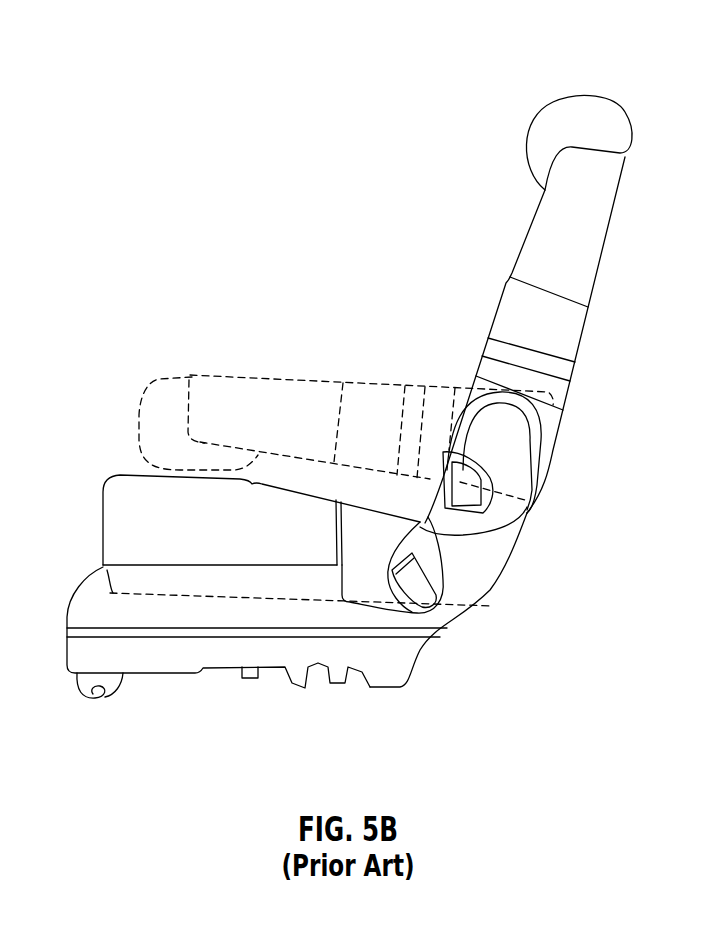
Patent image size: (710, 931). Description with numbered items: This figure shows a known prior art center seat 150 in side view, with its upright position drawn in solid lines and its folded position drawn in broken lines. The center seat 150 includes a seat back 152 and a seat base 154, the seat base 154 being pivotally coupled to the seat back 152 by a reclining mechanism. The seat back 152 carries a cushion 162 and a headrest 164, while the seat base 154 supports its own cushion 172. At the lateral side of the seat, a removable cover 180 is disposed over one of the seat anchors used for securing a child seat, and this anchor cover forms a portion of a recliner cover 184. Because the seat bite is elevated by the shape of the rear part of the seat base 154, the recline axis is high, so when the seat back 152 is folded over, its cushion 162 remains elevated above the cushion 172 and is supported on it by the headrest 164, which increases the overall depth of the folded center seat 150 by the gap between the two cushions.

The center seat 150 is at (297, 292).
The seat back 152 is at (602, 250).
The seat base 154 is at (203, 550).
The cushion 162 is at (510, 302).
The headrest 164 is at (597, 105).
The cushion 172 is at (280, 550).
The cover 180 is at (455, 530).
The recliner cover 184 is at (507, 530).